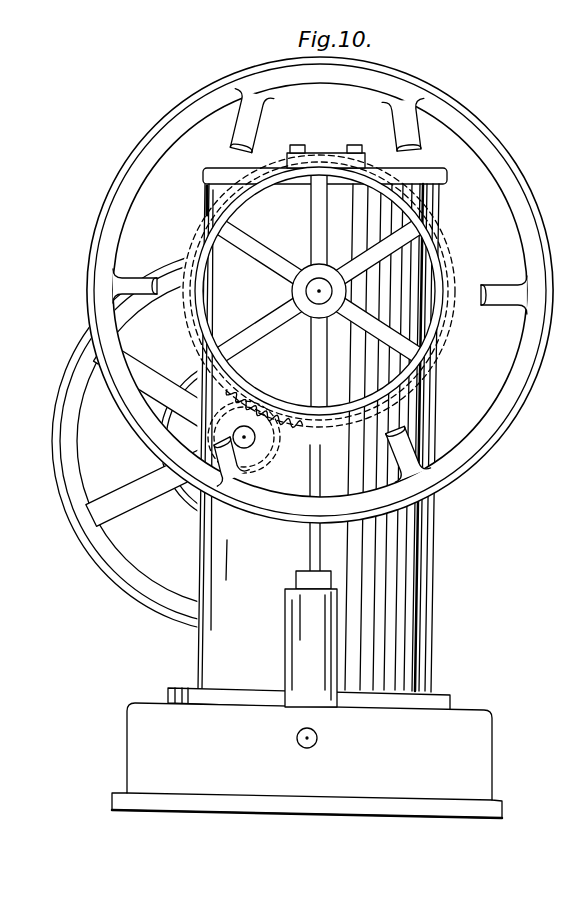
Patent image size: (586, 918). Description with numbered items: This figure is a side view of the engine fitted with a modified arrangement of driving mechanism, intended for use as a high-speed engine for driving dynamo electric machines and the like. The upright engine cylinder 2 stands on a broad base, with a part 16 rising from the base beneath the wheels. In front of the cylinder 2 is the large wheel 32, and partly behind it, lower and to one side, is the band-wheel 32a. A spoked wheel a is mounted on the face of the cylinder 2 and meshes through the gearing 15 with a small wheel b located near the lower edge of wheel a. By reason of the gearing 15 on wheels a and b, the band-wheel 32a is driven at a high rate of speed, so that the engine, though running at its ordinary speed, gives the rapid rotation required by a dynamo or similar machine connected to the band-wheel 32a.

The fly-wheel 32 is at (505, 421).
The band-wheel 32a is at (244, 441).
The cylinder 2 is at (309, 428).
The piston rod 16 is at (311, 576).
The gearing 15 is at (278, 426).
The wheel a is at (319, 291).
The wheel b is at (244, 437).